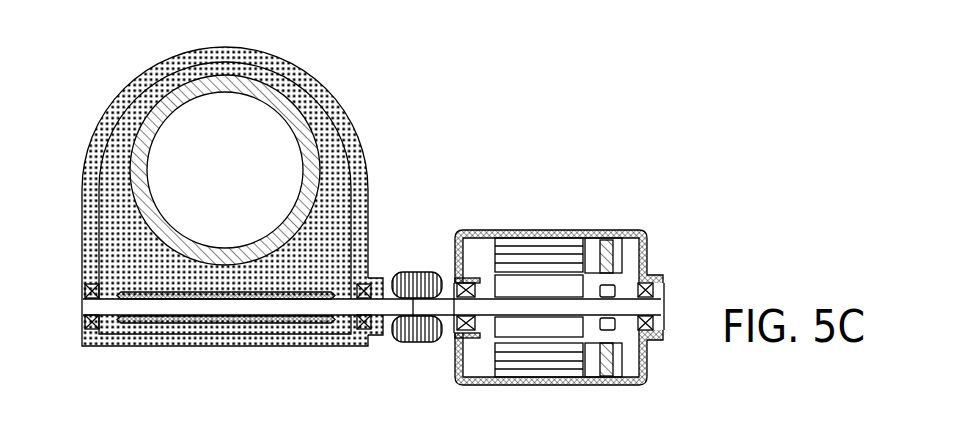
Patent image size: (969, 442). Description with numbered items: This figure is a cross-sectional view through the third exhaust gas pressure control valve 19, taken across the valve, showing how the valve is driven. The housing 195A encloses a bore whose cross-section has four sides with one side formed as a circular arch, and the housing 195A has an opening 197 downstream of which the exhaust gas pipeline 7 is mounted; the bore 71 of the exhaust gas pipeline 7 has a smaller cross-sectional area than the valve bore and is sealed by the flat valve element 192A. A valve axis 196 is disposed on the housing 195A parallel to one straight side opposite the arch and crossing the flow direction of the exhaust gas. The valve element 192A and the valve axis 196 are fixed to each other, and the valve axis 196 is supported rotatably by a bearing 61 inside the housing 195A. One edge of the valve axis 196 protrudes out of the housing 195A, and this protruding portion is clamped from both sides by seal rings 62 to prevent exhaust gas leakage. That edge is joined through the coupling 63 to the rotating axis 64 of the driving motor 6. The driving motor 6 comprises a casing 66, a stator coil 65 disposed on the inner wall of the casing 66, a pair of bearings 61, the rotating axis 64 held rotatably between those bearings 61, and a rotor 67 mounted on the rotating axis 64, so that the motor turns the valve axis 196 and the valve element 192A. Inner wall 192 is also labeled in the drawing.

The third exhaust gas pressure control valve 19 is at (173, 34).
The housing 195A is at (263, 55).
The opening 197 is at (298, 110).
The exhaust gas pipeline 7 is at (133, 130).
The bore 71 is at (225, 170).
The inner wall 192 is at (138, 237).
The valve element 192A is at (210, 320).
The valve axis 196 is at (123, 308).
The bearing 61 is at (90, 330).
The seal ring 62 is at (357, 325).
The coupling 63 is at (417, 274).
The rotating axis 64 is at (495, 308).
The stator coil 65 is at (577, 370).
The casing 66 is at (475, 385).
The rotor 67 is at (525, 328).
The driving motor 6 is at (572, 192).